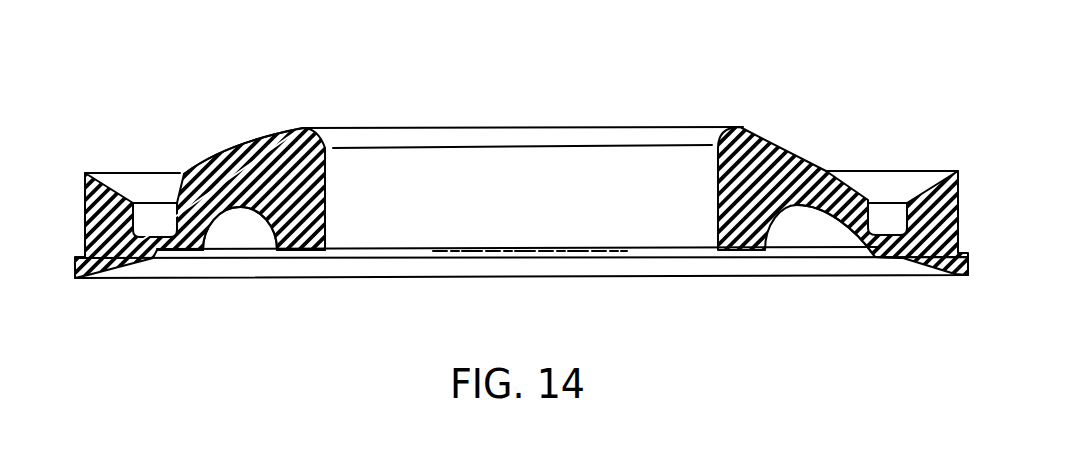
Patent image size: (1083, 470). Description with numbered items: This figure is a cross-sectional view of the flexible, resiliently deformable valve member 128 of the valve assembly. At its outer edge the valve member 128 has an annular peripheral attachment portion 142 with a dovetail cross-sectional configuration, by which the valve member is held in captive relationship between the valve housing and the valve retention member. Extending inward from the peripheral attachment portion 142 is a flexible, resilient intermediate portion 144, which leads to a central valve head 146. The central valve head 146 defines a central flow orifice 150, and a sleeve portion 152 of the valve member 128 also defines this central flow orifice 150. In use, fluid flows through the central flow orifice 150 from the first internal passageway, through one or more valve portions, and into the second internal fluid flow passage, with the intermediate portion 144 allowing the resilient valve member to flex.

The valve member 128 is at (773, 78).
The peripheral attachment portion 142 is at (962, 262).
The intermediate portion 144 is at (892, 258).
The central valve head 146 is at (250, 155).
The central flow orifice 150 is at (325, 227).
The sleeve portion 152 is at (293, 243).